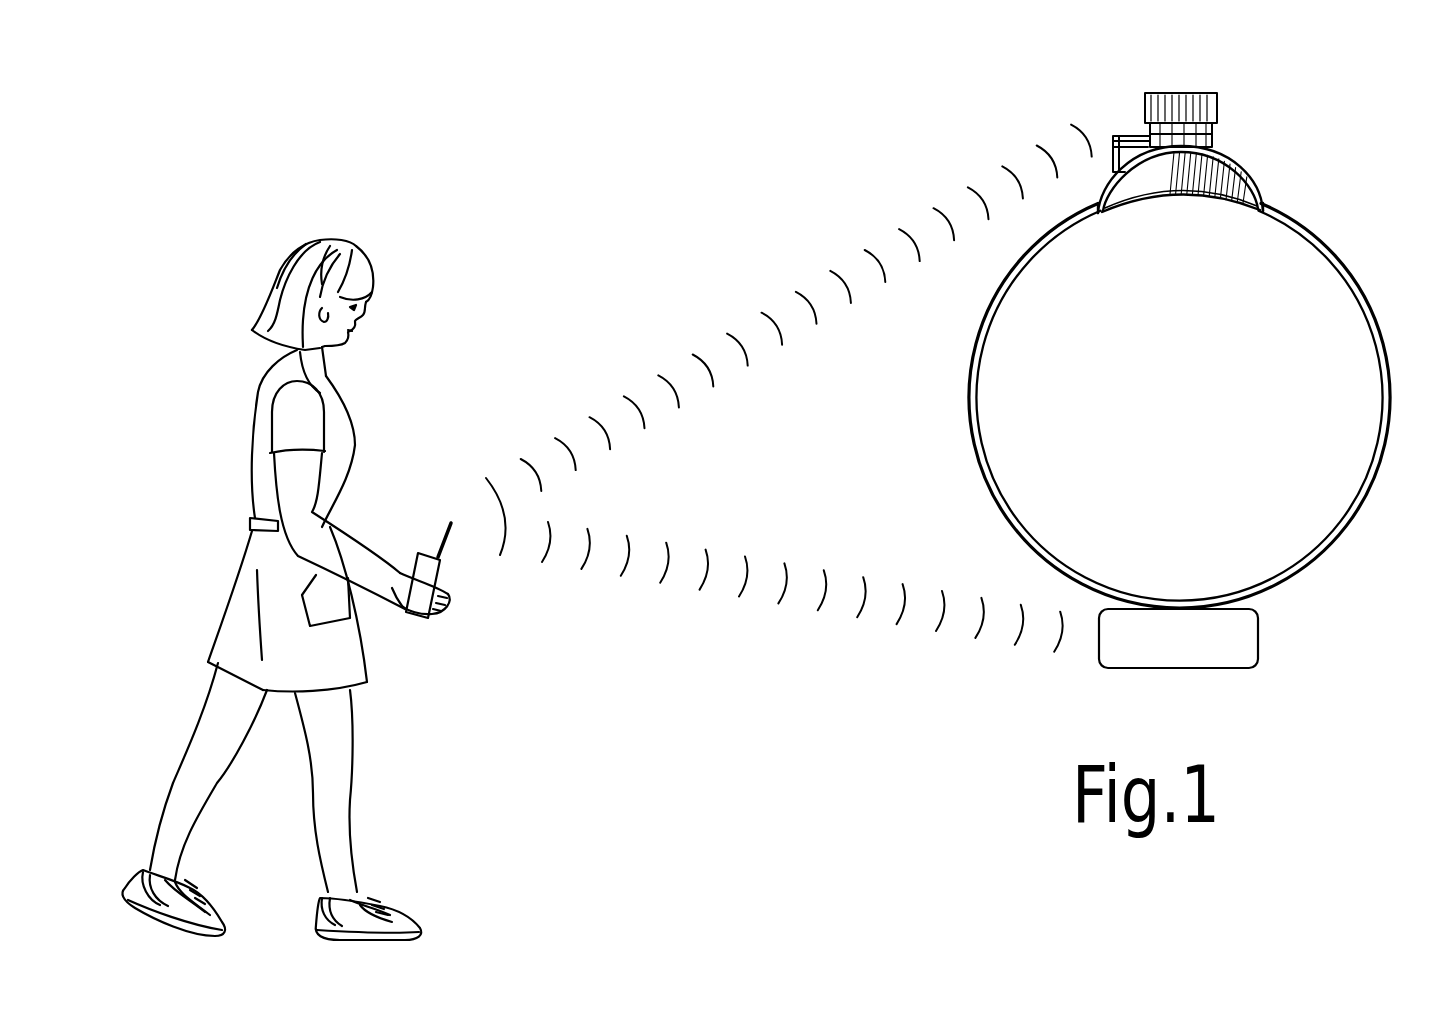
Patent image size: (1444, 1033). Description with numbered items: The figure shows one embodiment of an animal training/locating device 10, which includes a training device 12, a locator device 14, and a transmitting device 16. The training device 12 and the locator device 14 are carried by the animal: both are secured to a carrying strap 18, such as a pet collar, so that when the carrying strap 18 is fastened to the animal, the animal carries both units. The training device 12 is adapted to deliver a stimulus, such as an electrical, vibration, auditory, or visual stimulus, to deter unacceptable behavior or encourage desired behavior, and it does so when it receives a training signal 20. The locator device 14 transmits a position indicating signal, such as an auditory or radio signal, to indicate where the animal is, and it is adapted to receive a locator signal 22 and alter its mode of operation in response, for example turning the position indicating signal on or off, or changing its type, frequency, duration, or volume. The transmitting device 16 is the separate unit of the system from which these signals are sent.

The animal training/locating device 10 is at (1392, 108).
The training device 12 is at (1230, 638).
The locator device 14 is at (1230, 182).
The transmitting device 16 is at (437, 568).
The carrying strap 18 is at (1377, 331).
The training signal 20 is at (858, 614).
The locator signal 22 is at (744, 338).